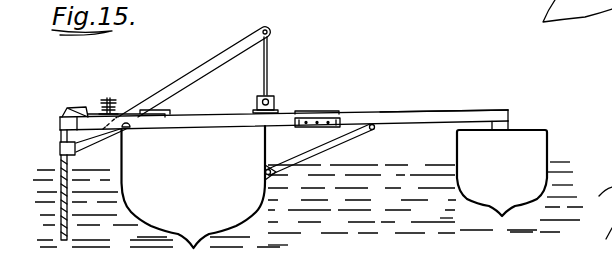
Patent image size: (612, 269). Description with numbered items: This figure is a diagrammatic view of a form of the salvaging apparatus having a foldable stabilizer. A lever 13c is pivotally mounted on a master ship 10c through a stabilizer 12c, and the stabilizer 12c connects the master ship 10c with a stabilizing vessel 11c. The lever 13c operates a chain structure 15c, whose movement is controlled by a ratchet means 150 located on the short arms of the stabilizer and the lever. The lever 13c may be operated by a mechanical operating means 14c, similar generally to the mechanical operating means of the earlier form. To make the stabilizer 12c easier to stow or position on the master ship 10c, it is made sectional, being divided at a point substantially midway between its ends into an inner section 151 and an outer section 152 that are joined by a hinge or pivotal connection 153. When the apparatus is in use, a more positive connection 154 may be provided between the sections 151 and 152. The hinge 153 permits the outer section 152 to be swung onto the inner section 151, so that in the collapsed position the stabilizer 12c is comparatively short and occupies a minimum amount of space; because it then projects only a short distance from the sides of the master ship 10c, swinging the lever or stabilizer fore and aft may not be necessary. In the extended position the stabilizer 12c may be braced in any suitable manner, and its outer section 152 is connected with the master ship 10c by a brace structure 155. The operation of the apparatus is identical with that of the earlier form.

The master ship 10c is at (194, 187).
The stabilizing vessel 11c is at (502, 173).
The stabilizer 12c is at (392, 111).
The lever 13c is at (198, 74).
The mechanical operating means 14c is at (273, 101).
The chain structure 15c is at (65, 228).
The ratchet means 150 is at (58, 145).
The inner section of stabilizer 151 is at (213, 125).
The outer section of stabilizer 152 is at (421, 111).
The hinge or pivotal connection 153 is at (315, 112).
The positive connection 154 is at (338, 114).
The brace structure 155 is at (322, 146).